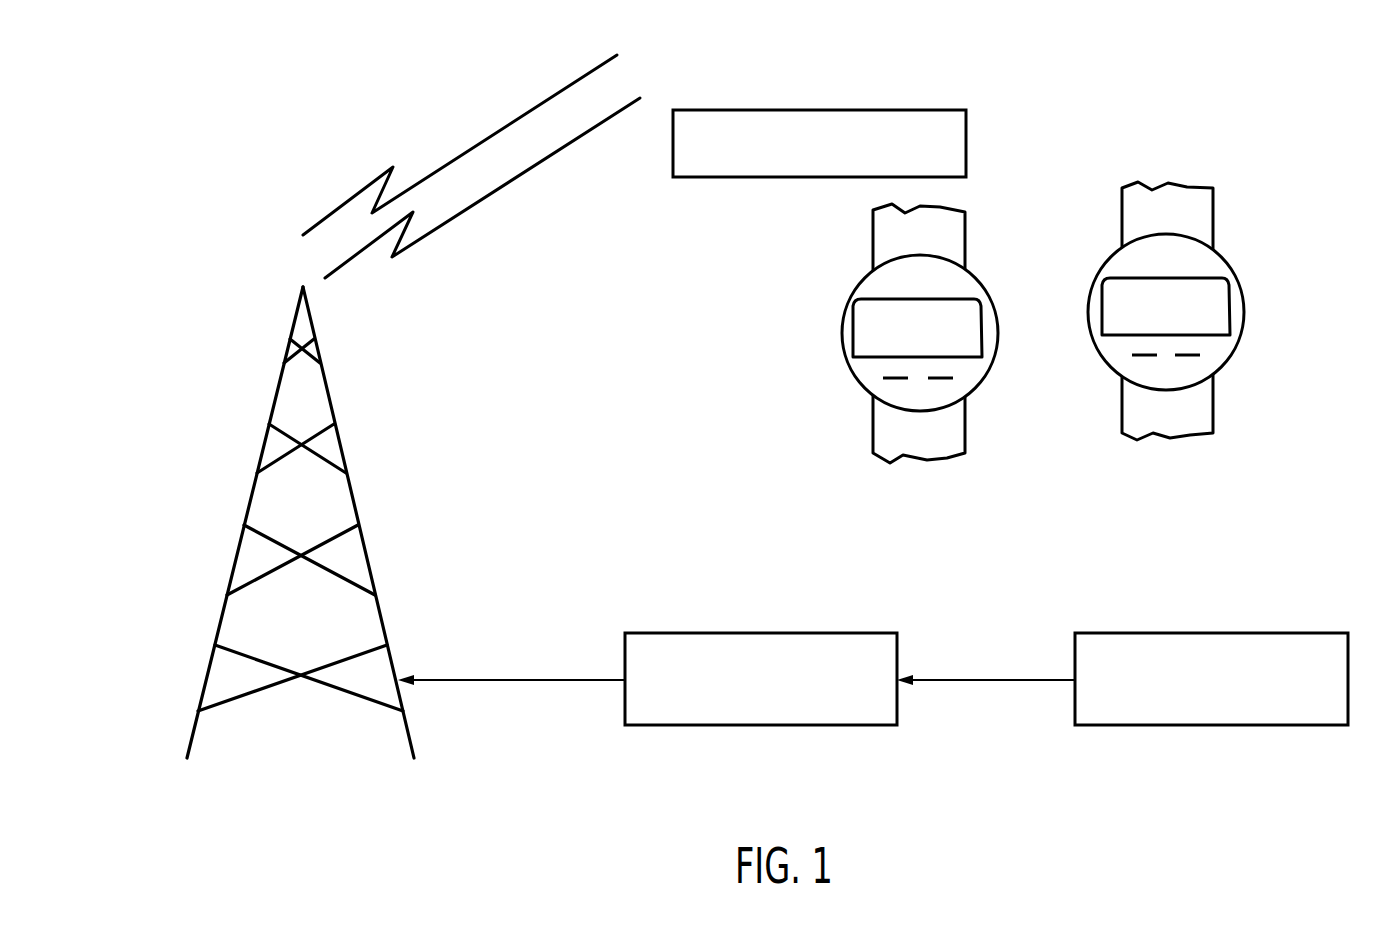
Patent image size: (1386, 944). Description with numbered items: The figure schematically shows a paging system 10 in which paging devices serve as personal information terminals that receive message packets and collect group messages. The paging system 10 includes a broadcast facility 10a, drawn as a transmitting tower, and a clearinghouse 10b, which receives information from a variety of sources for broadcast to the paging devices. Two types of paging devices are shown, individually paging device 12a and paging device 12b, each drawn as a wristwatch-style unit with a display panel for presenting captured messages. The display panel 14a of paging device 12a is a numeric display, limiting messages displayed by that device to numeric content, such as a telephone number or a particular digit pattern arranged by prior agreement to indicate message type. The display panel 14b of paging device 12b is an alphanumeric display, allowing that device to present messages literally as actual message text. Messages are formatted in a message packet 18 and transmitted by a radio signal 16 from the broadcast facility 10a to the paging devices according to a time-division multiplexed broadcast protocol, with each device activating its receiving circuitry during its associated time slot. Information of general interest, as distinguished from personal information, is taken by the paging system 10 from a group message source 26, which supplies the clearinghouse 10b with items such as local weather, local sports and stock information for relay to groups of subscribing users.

The paging system 10 is at (150, 252).
The broadcast facility 10a is at (380, 612).
The clearinghouse 10b is at (872, 645).
The paging device 12a is at (1209, 311).
The paging device 12b is at (885, 333).
The display panel 14a is at (1228, 309).
The display panel 14b is at (860, 333).
The radio signal 16 is at (502, 123).
The message packet 18 is at (945, 118).
The group message source 26 is at (1328, 643).